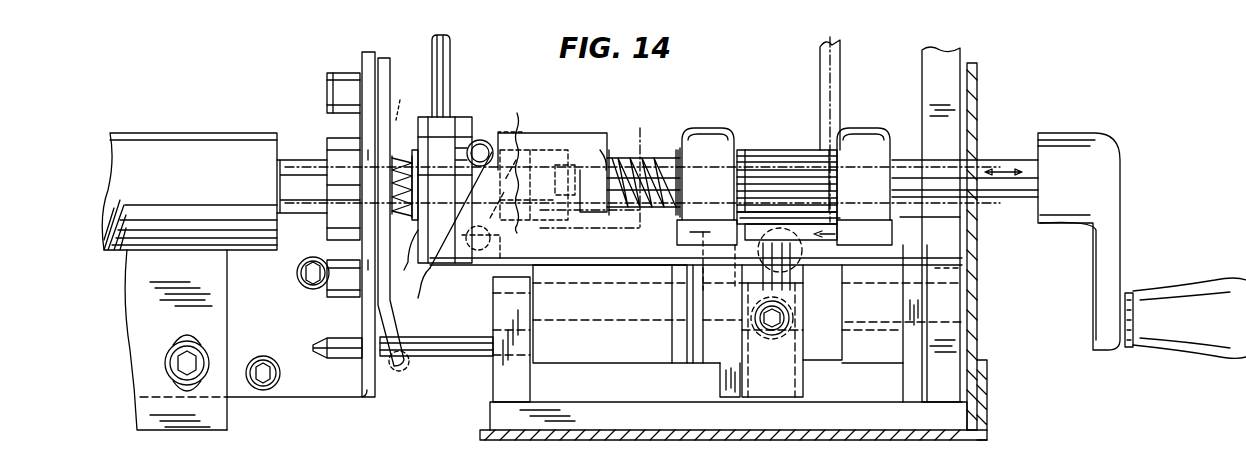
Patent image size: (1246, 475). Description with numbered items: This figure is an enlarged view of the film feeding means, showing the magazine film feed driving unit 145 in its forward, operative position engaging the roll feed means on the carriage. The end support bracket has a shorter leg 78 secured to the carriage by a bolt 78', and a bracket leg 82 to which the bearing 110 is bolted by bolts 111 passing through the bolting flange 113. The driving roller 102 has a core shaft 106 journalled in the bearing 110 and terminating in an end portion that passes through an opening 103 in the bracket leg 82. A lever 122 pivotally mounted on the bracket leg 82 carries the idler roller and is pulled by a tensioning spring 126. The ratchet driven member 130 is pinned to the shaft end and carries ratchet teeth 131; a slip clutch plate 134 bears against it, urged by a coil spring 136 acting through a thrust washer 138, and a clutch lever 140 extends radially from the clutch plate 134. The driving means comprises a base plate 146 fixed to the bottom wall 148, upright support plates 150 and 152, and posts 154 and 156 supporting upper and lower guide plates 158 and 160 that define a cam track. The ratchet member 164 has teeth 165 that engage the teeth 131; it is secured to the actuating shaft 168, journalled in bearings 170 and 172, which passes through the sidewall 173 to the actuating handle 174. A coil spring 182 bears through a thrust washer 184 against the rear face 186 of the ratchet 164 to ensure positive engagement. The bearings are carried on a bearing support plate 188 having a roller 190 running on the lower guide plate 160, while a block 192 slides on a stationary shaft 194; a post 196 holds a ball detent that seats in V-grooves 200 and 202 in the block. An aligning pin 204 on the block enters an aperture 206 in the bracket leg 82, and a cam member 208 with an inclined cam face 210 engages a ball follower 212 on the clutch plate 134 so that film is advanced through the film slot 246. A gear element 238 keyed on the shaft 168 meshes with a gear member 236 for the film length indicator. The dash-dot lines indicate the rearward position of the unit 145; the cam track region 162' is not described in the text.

The shorter leg 78 is at (253, 340).
The bolt 78' is at (231, 341).
The bracket leg 82 is at (366, 52).
The driving roller 102 is at (204, 135).
The opening 103 is at (410, 98).
The core shaft 106 is at (283, 213).
The bearing 110 is at (330, 147).
The bolts 111 is at (338, 72).
The bolting flange 113 is at (360, 127).
The lever 122 is at (388, 55).
The tensioning spring 126 is at (404, 372).
The ratchet driven member 130 is at (490, 140).
The ratchet teeth 131 is at (515, 112).
The slip clutch plate 134 is at (410, 262).
The coil spring 136 is at (398, 222).
The thrust washer 138 is at (418, 118).
The clutch lever 140 is at (450, 40).
The bearing-shaft unit 145 is at (753, 134).
The base plate 146 is at (490, 416).
The bottom wall 148 is at (480, 437).
The support plate 150 is at (495, 386).
The support plate 152 is at (924, 68).
The post 154 is at (918, 252).
The post 156 is at (718, 386).
The upper guide plate 158 is at (850, 222).
The lower guide plate 160 is at (935, 275).
The slide block 162' is at (809, 229).
The ratchet member 164 is at (590, 145).
The teeth 165 is at (520, 130).
The actuating shaft 168 is at (656, 152).
The bearing 170 is at (708, 132).
The bearing 172 is at (860, 130).
The sidewall 173 is at (977, 64).
The actuating handle 174 is at (1095, 270).
The coil spring 182 is at (684, 155).
The thrust washer 184 is at (634, 150).
The rear face 186 is at (608, 130).
The bearing support plate 188 is at (880, 265).
The roller 190 is at (808, 249).
The block 192 is at (845, 350).
The stationary shaft 194 is at (578, 328).
The post 196 is at (752, 352).
The V-groove 200 is at (685, 275).
The V-groove 202 is at (760, 253).
The aligning pin 204 is at (474, 335).
The aperture 206 is at (362, 334).
The cam member 208 is at (572, 251).
The inclined cam face 210 is at (440, 270).
The ball follower 212 is at (486, 140).
The gear member 236 is at (820, 72).
The gear element 238 is at (804, 150).
The film slot 246 is at (180, 430).